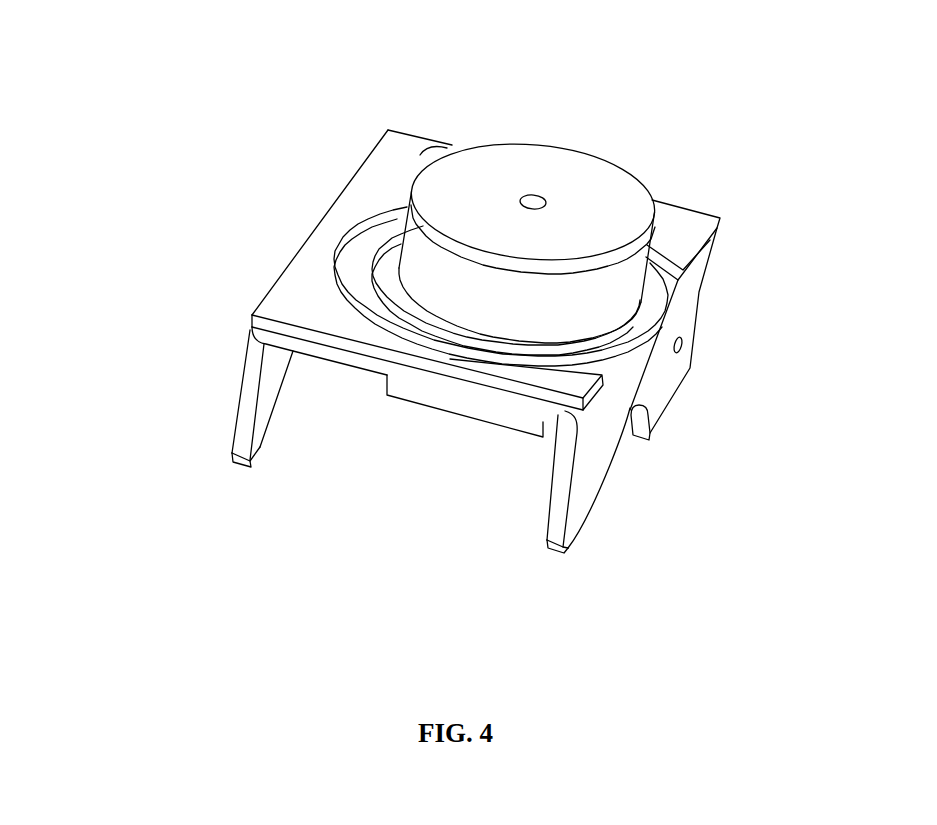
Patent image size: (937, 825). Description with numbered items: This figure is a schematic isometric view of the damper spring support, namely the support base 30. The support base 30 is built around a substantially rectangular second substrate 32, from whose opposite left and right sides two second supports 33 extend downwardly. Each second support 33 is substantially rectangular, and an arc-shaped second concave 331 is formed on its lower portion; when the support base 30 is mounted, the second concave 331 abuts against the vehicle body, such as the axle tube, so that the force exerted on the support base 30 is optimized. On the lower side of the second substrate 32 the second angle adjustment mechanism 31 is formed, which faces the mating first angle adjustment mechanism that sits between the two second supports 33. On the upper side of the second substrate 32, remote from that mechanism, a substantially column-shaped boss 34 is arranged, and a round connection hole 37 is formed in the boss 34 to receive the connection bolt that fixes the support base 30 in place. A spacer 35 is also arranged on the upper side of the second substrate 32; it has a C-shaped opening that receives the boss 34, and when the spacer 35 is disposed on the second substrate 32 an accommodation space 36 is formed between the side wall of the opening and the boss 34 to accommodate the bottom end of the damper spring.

The support base 30 is at (13, 147).
The second angle adjustment mechanism 31 is at (440, 402).
The second substrate 32 is at (297, 350).
The second support 33 is at (245, 388).
The second concave 331 is at (620, 452).
The boss 34 is at (600, 210).
The spacer 35 is at (313, 258).
The accommodation space 36 is at (655, 267).
The connection hole 37 is at (537, 198).